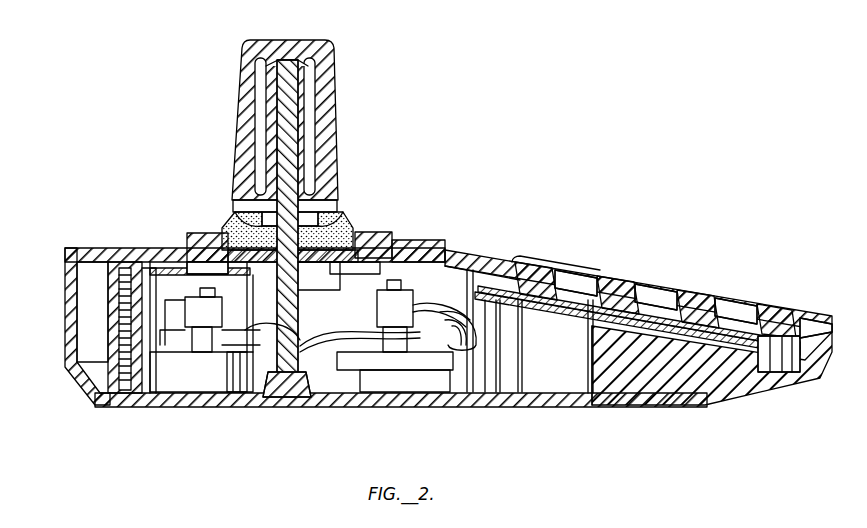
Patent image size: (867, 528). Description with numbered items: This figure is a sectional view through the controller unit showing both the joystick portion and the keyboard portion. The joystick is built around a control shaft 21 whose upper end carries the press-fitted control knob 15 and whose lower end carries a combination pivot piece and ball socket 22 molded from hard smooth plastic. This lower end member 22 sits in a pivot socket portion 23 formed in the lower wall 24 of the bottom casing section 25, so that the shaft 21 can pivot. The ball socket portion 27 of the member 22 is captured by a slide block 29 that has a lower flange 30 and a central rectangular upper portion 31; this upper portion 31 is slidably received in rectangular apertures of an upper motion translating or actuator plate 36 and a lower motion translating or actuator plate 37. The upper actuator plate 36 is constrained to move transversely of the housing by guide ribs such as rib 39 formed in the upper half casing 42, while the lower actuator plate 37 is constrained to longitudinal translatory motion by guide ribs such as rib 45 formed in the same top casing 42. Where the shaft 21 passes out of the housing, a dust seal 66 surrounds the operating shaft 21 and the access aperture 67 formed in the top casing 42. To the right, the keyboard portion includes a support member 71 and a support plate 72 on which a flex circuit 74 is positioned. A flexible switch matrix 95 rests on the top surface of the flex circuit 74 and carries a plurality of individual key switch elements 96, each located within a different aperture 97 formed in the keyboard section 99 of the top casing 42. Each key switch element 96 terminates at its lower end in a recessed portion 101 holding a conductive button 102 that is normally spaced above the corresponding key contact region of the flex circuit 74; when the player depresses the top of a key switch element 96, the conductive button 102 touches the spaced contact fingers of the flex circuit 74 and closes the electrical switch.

The control knob 15 is at (335, 120).
The control shaft 21 is at (288, 196).
The combination pivot piece and ball socket 22 is at (299, 338).
The pivot socket portion 23 is at (295, 406).
The lower wall 24 is at (595, 406).
The bottom casing section 25 is at (92, 408).
The ball socket portion 27 is at (362, 230).
The slide block 29 is at (254, 300).
The lower flange 30 is at (313, 292).
The central rectangular upper portion 31 is at (238, 214).
The upper motion translating or actuator plate 36 is at (183, 247).
The lower motion translating or actuator plate 37 is at (230, 342).
The guide rib 39 is at (150, 250).
The upper half casing 42 is at (91, 243).
The guide rib 45 is at (395, 248).
The dust seal 66 is at (345, 214).
The access aperture 67 is at (225, 226).
The support member 71 is at (520, 407).
The support plate 72 is at (680, 402).
The flex circuit 74 is at (576, 275).
The flexible switch matrix 95 is at (563, 288).
The key switch element 96 is at (548, 272).
The aperture 97 is at (518, 252).
The keyboard section 99 is at (784, 318).
The recessed portion 101 is at (557, 285).
The conductive button 102 is at (558, 272).